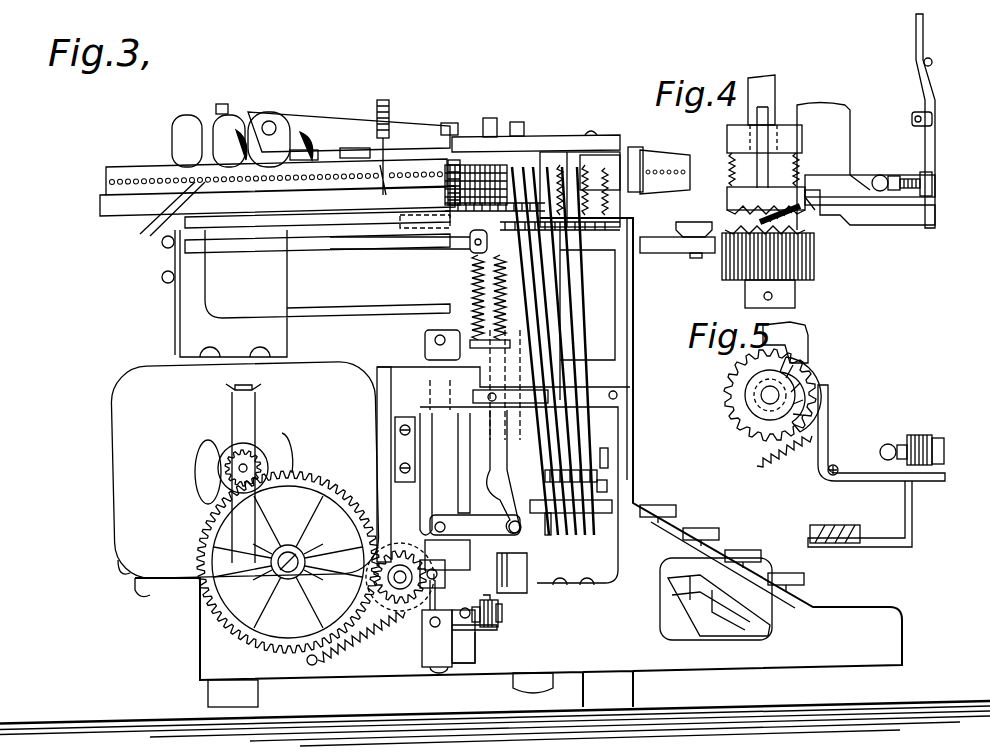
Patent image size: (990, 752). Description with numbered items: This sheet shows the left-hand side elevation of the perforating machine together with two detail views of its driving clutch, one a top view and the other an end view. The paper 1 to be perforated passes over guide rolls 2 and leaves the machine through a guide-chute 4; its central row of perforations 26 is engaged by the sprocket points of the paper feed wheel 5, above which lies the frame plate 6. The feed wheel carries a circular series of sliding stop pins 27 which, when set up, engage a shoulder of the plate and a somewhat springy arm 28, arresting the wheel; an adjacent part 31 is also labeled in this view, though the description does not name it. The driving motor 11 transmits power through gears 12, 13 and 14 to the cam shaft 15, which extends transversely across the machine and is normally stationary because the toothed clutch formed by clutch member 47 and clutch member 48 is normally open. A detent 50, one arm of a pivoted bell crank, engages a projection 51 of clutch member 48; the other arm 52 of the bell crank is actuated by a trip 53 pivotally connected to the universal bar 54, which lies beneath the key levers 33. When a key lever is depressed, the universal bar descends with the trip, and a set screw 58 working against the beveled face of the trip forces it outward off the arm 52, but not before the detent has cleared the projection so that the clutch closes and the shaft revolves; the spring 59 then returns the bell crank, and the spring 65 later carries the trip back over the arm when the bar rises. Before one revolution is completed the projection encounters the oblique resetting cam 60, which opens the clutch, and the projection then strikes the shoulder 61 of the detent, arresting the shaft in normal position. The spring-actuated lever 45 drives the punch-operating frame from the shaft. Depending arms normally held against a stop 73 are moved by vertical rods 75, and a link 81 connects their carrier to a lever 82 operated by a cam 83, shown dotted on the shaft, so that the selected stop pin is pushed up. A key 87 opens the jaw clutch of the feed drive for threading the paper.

In FIG. 3, the paper 1 is at (106, 176).
In FIG. 3, the guide rolls 2 is at (435, 153).
In FIG. 3, the guide-chute 4 is at (635, 152).
In FIG. 3, the paper feed wheel 5 is at (490, 168).
In FIG. 3, the frame plate 6 is at (543, 147).
In FIG. 3, the driving motor 11 is at (245, 470).
In FIG. 3, the gear 12 is at (252, 460).
In FIG. 3, the gear 13 is at (308, 483).
In FIG. 3, the gear 14 is at (370, 565).
In FIG. 5, the gear 14 is at (750, 412).
In FIG. 3, the cam shaft 15 is at (403, 600).
In FIG. 4, the cam shaft 15 is at (778, 90).
In FIG. 5, the cam shaft 15 is at (768, 392).
In FIG. 3, the perforations 26 is at (161, 222).
In FIG. 3, the sliding stop pins 27 is at (480, 203).
In FIG. 3, the arm 28 is at (330, 125).
In FIG. 3, the lever arm 31 is at (290, 140).
In FIG. 3, the key levers 33 is at (782, 575).
In FIG. 3, the spring-actuated lever 45 is at (280, 292).
In FIG. 4, the clutch member 47 is at (727, 260).
In FIG. 4, the clutch member 48 is at (727, 198).
In FIG. 5, the clutch member 48 is at (805, 382).
In FIG. 3, the detent 50 is at (459, 626).
In FIG. 4, the detent 50 is at (848, 176).
In FIG. 5, the detent 50 is at (830, 418).
In FIG. 3, the projection 51 is at (440, 584).
In FIG. 4, the projection 51 is at (815, 178).
In FIG. 5, the projection 51 is at (822, 398).
In FIG. 3, the arm 52 is at (477, 630).
In FIG. 4, the arm 52 is at (895, 225).
In FIG. 5, the arm 52 is at (875, 482).
In FIG. 3, the trip 53 is at (497, 608).
In FIG. 4, the trip 53 is at (932, 190).
In FIG. 4, the universal bar 54 is at (915, 40).
In FIG. 5, the universal bar 54 is at (930, 438).
In FIG. 3, the set screw 58 is at (498, 615).
In FIG. 4, the set screw 58 is at (892, 178).
In FIG. 5, the set screw 58 is at (898, 445).
In FIG. 3, the spring 59 is at (372, 634).
In FIG. 5, the spring 59 is at (780, 462).
In FIG. 4, the resetting cam 60 is at (800, 215).
In FIG. 5, the resetting cam 60 is at (808, 340).
In FIG. 4, the shoulder 61 is at (813, 190).
In FIG. 3, the spring 65 is at (500, 600).
In FIG. 4, the spring 65 is at (932, 124).
In FIG. 3, the stop 73 is at (540, 370).
In FIG. 3, the vertical rods 75 is at (595, 396).
In FIG. 3, the link 81 is at (505, 505).
In FIG. 3, the lever 82 is at (455, 535).
In FIG. 3, the cam 83 is at (385, 535).
In FIG. 3, the key 87 is at (700, 240).